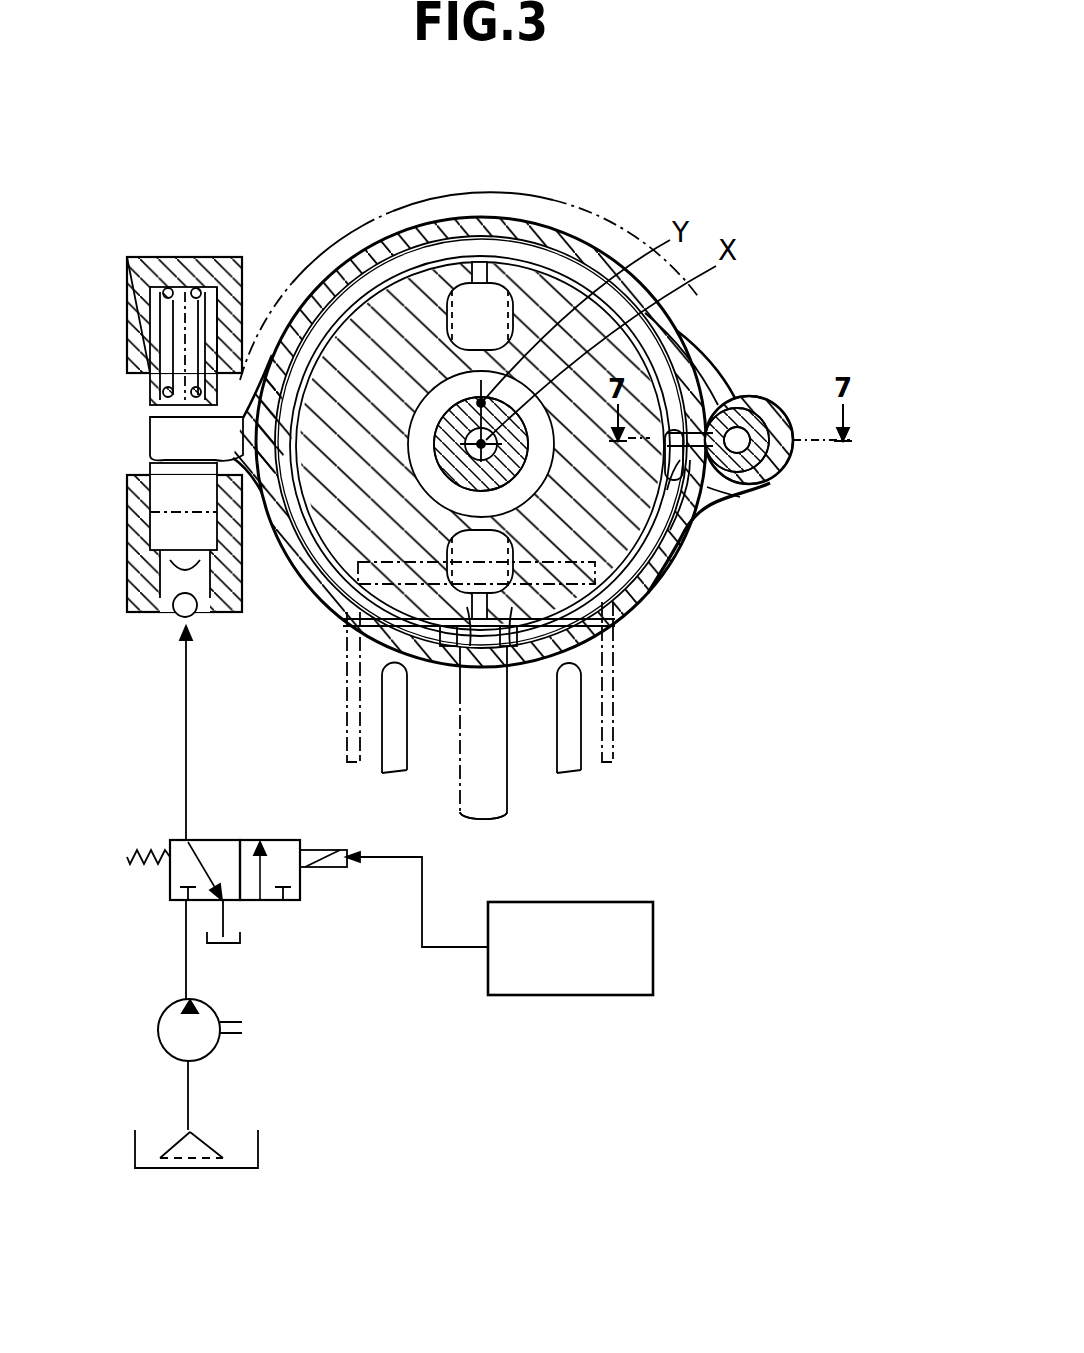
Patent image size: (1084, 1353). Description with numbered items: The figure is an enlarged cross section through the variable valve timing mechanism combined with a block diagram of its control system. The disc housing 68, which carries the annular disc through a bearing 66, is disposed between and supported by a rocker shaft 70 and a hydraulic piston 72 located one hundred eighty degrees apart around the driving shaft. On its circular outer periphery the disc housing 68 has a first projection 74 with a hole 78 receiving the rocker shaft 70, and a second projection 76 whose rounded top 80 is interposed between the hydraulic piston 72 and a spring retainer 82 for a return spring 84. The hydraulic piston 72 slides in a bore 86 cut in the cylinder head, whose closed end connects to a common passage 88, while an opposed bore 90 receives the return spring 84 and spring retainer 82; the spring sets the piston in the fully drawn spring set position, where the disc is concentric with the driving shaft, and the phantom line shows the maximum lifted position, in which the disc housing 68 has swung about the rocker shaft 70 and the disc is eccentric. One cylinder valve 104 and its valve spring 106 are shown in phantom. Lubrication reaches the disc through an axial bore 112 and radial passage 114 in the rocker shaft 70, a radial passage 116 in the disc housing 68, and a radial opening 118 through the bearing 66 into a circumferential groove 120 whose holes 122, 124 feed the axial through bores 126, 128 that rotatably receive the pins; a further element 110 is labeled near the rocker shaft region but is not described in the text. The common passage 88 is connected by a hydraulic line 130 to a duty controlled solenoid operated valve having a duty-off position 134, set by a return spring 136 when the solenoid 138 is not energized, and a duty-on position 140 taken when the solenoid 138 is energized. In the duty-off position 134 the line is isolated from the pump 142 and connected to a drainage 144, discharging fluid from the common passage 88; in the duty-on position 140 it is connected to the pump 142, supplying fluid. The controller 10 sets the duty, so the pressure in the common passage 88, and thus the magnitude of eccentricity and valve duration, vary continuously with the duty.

The controller 10 is at (647, 930).
The bearing 66 is at (697, 350).
The disc housing 68 is at (630, 612).
The rocker shaft 70 is at (763, 410).
The hydraulic piston 72 is at (157, 503).
The first projection 74 is at (740, 470).
The second projection 76 is at (238, 525).
The hole 78 is at (783, 475).
The rounded top 80 is at (150, 465).
The spring retainer 82 is at (150, 400).
The return spring 84 is at (205, 273).
The bore 86 is at (213, 585).
The common passage 88 is at (160, 600).
The bore 90 is at (208, 313).
The valve 104 is at (508, 785).
The valve spring 106 is at (583, 767).
The pin bore 110 is at (762, 398).
The axial bore 112 is at (710, 473).
The radial passage 114 is at (733, 384).
The radial passage 116 is at (707, 487).
The radial opening 118 is at (667, 490).
The circumferential groove 120 is at (578, 290).
The hole 122 is at (502, 290).
The hole 124 is at (462, 768).
The axial through bore 126 is at (440, 275).
The axial through bore 128 is at (335, 620).
The hydraulic line 130 is at (185, 718).
The duty-off position 134 is at (178, 842).
The return spring 136 is at (145, 870).
The solenoid 138 is at (322, 857).
The duty-on position 140 is at (272, 840).
The pump 142 is at (166, 1012).
The drainage 144 is at (227, 920).